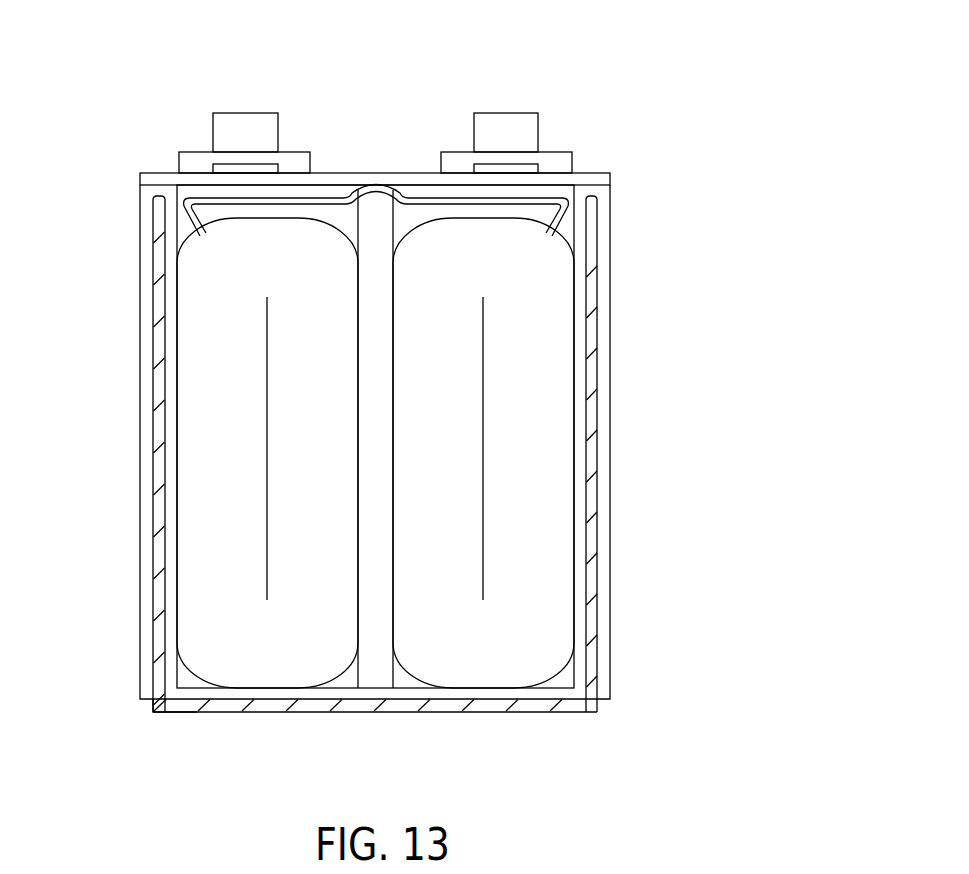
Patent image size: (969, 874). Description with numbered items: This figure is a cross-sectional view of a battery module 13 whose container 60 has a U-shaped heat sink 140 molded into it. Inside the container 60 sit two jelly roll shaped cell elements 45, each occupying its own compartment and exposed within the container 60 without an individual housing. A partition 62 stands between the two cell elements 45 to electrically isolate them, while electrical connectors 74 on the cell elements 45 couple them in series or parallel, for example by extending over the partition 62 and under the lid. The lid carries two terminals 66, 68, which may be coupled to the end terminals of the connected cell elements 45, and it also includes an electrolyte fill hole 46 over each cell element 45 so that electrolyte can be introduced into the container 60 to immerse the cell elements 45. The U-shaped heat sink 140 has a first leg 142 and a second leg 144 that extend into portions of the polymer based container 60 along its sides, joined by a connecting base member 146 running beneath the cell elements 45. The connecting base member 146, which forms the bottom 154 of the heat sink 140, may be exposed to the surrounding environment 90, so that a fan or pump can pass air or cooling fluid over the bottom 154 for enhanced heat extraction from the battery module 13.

The battery module 13 is at (640, 52).
The cell element 45 is at (216, 347).
The electrolyte fill hole 46 is at (246, 165).
The container 60 is at (640, 365).
The partition 62 is at (376, 430).
The terminal 66 is at (242, 130).
The terminal 68 is at (504, 130).
The electrical connector 74 is at (545, 200).
The environment 90 is at (729, 202).
The U-shaped heat sink 140 is at (561, 703).
The first leg 142 is at (156, 470).
The second leg 144 is at (594, 548).
The connecting base member 146 is at (385, 705).
The bottom 154 is at (173, 702).